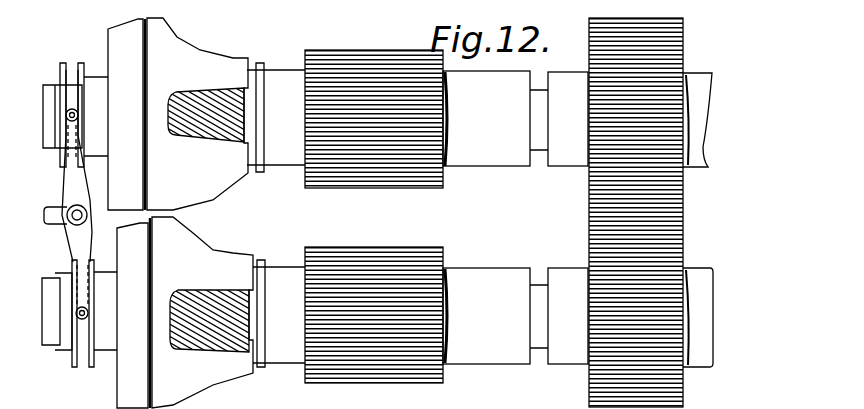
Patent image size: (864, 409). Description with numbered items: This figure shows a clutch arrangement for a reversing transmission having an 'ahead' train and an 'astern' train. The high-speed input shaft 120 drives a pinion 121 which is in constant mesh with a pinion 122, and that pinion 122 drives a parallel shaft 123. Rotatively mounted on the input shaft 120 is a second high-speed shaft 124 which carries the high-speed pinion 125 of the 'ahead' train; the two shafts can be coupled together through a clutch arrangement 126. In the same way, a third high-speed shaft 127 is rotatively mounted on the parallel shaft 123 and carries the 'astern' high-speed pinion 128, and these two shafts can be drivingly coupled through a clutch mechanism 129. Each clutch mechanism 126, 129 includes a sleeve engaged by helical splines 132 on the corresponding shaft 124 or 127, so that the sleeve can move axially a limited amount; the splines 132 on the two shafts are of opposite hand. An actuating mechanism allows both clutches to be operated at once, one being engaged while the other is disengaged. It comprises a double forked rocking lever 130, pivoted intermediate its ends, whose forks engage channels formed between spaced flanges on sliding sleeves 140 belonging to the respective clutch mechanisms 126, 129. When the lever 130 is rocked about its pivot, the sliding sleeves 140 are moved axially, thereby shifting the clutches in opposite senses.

The high-speed input shaft 120 is at (568, 160).
The pinion 121 is at (588, 190).
The pinion 122 is at (589, 250).
The parallel shaft 123 is at (567, 358).
The second high-speed shaft 124 is at (492, 160).
The high-speed pinion 125 is at (388, 52).
The clutch arrangement 126 is at (185, 40).
The third high-speed shaft 127 is at (474, 272).
The astern high-speed pinion 128 is at (382, 247).
The clutch mechanism 129 is at (195, 392).
The double forked rocking lever 130 is at (77, 226).
The helical splines 132 is at (217, 143).
The sliding sleeve 140 is at (71, 70).